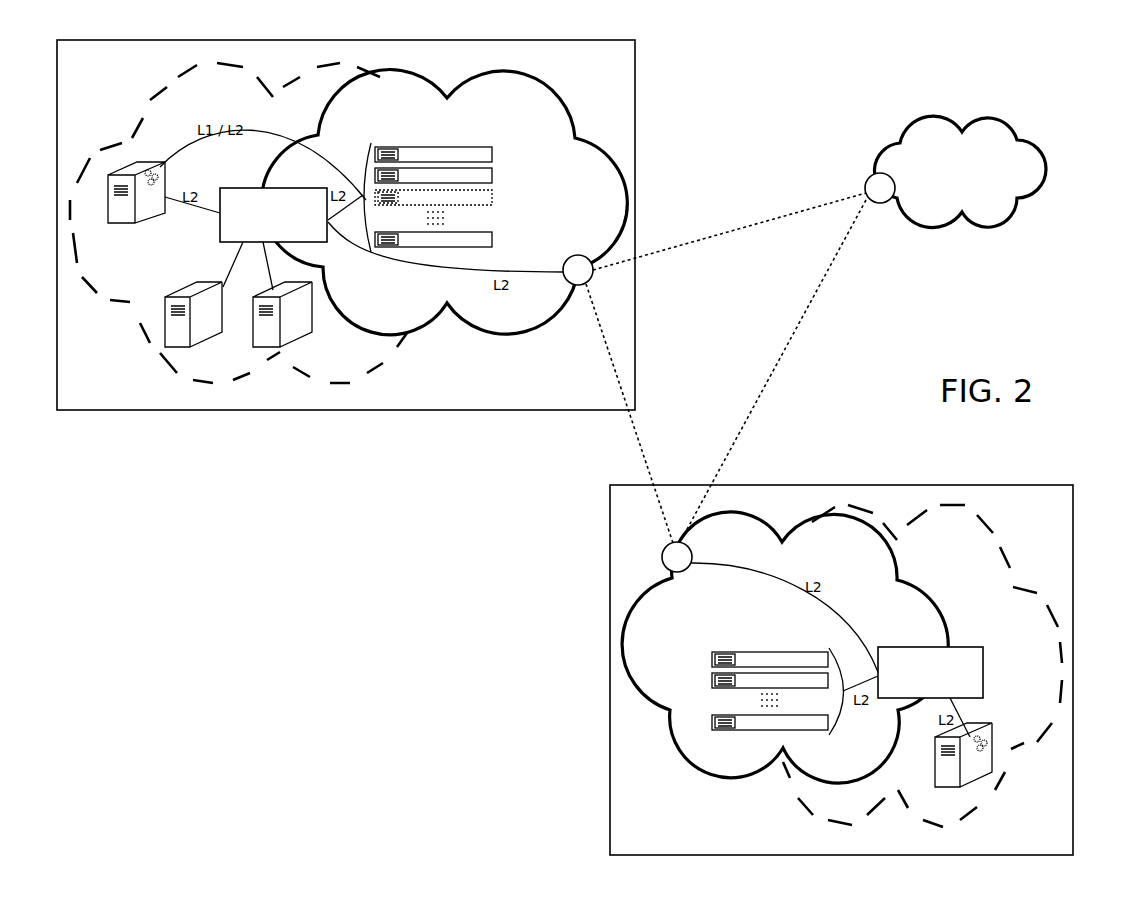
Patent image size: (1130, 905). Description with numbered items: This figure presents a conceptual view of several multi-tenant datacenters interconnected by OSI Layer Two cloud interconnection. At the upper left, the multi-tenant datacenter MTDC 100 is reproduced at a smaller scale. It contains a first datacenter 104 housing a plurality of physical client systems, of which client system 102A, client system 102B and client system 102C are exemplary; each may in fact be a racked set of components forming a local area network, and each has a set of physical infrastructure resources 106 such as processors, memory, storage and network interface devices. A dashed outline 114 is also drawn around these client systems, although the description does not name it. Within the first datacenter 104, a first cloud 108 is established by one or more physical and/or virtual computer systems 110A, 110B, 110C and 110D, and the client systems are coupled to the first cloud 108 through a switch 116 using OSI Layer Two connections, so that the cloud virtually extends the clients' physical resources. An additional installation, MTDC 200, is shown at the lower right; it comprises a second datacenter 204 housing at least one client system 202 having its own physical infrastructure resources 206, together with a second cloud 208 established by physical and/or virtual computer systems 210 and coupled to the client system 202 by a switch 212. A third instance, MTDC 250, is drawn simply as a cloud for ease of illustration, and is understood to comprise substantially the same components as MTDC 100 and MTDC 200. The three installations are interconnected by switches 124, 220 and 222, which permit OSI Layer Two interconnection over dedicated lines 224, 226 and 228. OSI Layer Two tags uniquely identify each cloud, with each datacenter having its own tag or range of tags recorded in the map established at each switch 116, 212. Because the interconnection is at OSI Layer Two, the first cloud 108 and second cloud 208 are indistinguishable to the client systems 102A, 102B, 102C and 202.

The multi-tenant datacenter (MTDC) 100 is at (640, 73).
The client system 102A is at (115, 224).
The client system 102B is at (193, 284).
The client system 102C is at (308, 328).
The first datacenter 104 is at (357, 412).
The physical infrastructure resources 106 is at (160, 171).
The first cloud 108 is at (550, 85).
The computer system 110A is at (437, 150).
The computer system 110B is at (373, 172).
The computer system 110C is at (446, 198).
The computer system 110D is at (405, 248).
The local network 114 is at (146, 96).
The switch 116 is at (288, 222).
The switch 124 is at (582, 286).
The multi-tenant datacenter (MTDC) 200 is at (808, 474).
The client system 202 is at (990, 760).
The second datacenter 204 is at (614, 641).
The physical infrastructure resources 206 is at (985, 740).
The second cloud 208 is at (668, 722).
The computer systems 210 is at (748, 652).
The switch 212 is at (945, 681).
The switch 220 is at (665, 554).
The switch 222 is at (881, 204).
The dedicated line 224 is at (636, 429).
The dedicated line 226 is at (676, 248).
The dedicated line 228 is at (760, 412).
The multi-tenant datacenter (MTDC) 250 is at (1013, 123).